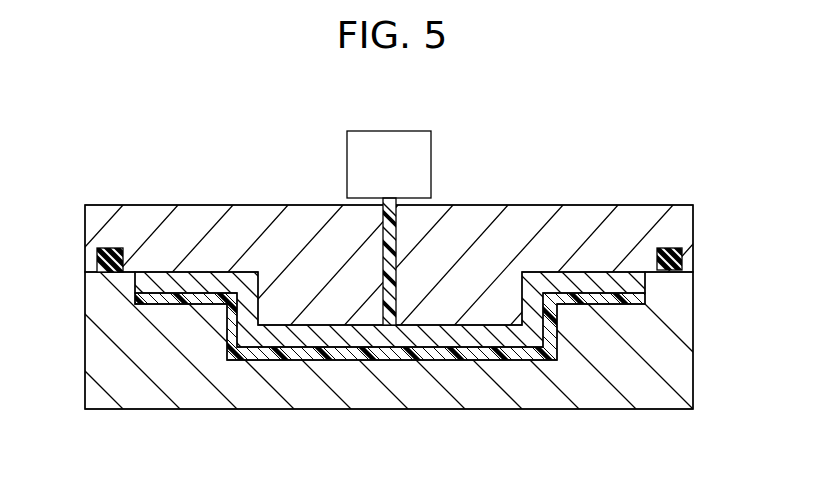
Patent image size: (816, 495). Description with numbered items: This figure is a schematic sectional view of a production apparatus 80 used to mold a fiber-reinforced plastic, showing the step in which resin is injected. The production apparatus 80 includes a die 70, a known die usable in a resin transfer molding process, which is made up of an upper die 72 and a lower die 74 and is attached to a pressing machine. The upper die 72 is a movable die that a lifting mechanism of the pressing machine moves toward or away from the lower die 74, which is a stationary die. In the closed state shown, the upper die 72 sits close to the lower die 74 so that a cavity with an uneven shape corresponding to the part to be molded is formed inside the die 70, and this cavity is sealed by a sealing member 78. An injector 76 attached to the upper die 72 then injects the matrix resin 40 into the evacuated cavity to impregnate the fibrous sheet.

The matrix resin 40 is at (378, 266).
The die 70 is at (645, 200).
The upper die 72 is at (528, 218).
The lower die 74 is at (593, 397).
The injector 76 is at (391, 143).
The sealing member 78 is at (97, 260).
The production apparatus 80 is at (391, 272).